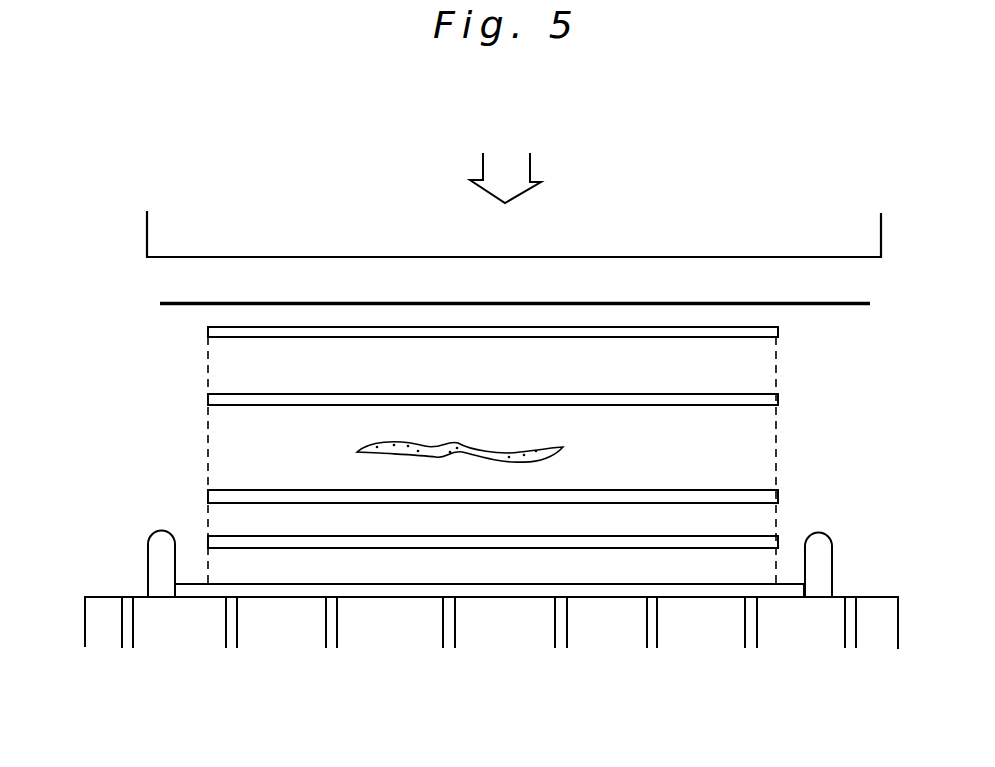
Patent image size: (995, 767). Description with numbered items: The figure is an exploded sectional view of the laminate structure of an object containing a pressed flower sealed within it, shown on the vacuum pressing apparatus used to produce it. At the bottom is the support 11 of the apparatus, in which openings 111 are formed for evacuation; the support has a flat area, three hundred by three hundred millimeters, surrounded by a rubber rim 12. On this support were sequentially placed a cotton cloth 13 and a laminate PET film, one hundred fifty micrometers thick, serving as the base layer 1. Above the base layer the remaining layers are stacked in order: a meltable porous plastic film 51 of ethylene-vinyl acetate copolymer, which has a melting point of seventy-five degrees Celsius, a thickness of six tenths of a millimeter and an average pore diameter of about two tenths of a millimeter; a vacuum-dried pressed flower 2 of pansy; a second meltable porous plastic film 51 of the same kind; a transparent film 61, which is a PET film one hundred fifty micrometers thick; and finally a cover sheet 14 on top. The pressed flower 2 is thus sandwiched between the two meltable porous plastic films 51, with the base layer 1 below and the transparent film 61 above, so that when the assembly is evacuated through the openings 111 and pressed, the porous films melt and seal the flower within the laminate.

The base layer 1 is at (617, 543).
The pressed flower 2 is at (365, 447).
The support 11 is at (491, 665).
The openings 111 is at (648, 617).
The rubber rim 12 is at (165, 558).
The cotton cloth 13 is at (705, 590).
The cover sheet 14 is at (165, 302).
The meltable porous plastic film 51 is at (237, 493).
The transparent film 61 is at (208, 332).